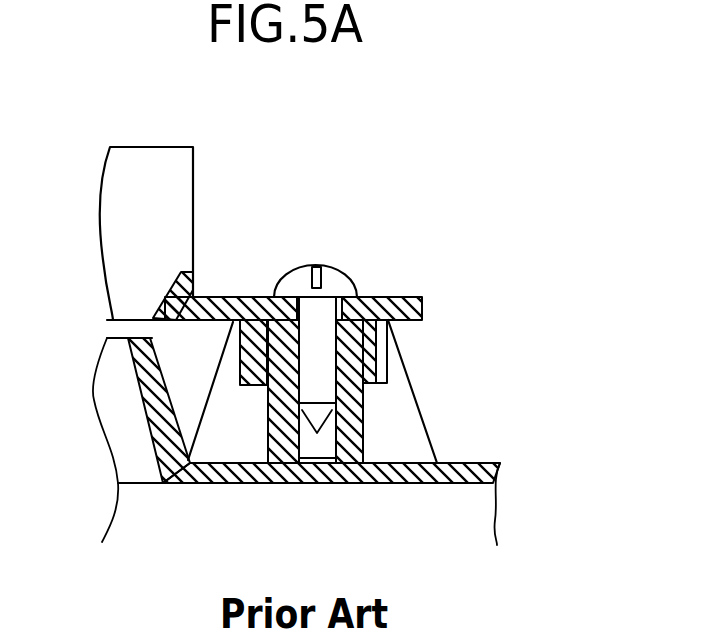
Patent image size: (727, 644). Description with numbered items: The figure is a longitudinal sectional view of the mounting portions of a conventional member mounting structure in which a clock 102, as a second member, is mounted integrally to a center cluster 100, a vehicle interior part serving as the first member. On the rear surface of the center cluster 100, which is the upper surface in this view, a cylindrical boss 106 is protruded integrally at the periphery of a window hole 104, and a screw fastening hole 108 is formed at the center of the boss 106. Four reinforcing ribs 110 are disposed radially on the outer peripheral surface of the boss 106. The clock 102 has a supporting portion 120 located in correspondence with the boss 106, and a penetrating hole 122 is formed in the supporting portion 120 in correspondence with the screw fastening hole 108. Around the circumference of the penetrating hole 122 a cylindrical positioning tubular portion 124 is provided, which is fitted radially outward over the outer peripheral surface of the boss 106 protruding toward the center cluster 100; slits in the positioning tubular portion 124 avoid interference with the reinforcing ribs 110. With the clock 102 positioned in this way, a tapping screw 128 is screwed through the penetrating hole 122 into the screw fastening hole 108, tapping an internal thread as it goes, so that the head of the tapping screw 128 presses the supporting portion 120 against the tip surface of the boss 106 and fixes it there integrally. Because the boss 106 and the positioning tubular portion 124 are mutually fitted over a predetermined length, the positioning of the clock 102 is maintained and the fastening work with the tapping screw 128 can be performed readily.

The center cluster 100 is at (423, 465).
The clock 102 is at (145, 192).
The window hole 104 is at (142, 402).
The boss 106 is at (355, 406).
The screw fastening hole 108 is at (311, 452).
The reinforcing ribs 110 is at (233, 443).
The supporting portion 120 is at (216, 303).
The penetrating hole 122 is at (307, 267).
The positioning tubular portion 124 is at (376, 362).
The tapping screw 128 is at (335, 282).